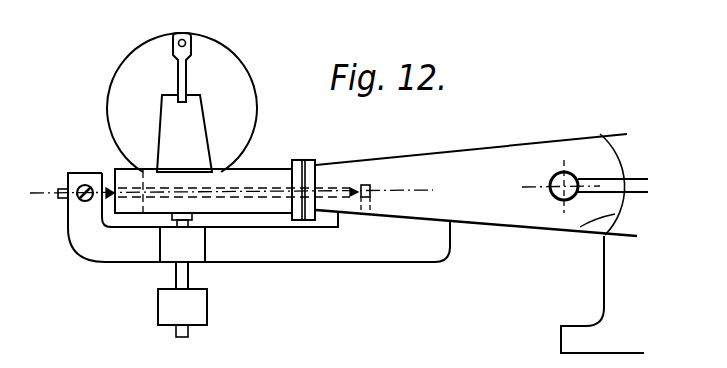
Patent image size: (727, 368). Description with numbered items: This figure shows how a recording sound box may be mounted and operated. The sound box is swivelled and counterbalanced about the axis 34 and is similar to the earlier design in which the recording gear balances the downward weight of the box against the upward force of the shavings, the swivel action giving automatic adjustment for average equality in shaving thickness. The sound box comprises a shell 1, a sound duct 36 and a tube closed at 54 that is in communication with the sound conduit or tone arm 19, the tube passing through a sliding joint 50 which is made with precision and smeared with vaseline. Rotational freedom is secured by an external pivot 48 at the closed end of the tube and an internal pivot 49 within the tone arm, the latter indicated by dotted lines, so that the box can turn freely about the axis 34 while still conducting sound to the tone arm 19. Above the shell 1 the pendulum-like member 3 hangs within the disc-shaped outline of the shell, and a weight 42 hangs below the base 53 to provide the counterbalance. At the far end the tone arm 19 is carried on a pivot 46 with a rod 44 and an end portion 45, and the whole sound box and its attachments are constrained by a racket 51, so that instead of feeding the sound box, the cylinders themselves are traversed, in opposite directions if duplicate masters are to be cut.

The shell 1 is at (229, 64).
The pendulum arm 3 is at (177, 68).
The sound duct 36 is at (168, 118).
The external pivot 48 is at (60, 189).
The closed end of tube 54 is at (117, 230).
The slide bar 53 is at (230, 203).
The sliding joint 50 is at (304, 200).
The internal pivot 49 is at (347, 190).
The sound conduit or tone arm 19 is at (422, 164).
The axis 34 is at (408, 192).
The pivot 46 is at (553, 174).
The rod 44 is at (595, 180).
The lever end 45 is at (580, 227).
The racket 51 is at (620, 283).
The counterweight 42 is at (158, 308).